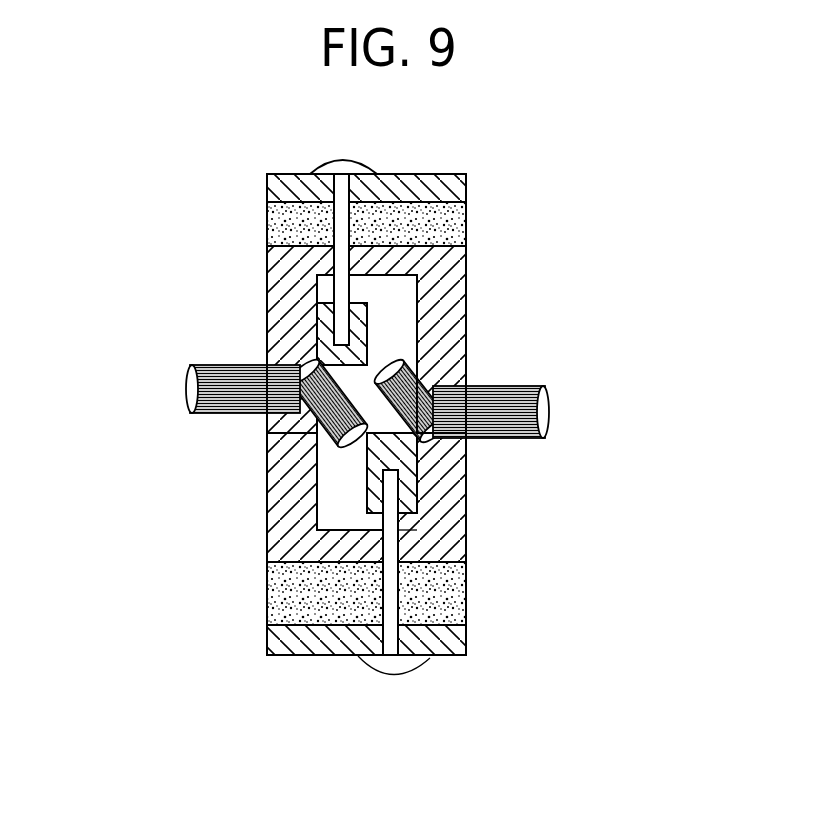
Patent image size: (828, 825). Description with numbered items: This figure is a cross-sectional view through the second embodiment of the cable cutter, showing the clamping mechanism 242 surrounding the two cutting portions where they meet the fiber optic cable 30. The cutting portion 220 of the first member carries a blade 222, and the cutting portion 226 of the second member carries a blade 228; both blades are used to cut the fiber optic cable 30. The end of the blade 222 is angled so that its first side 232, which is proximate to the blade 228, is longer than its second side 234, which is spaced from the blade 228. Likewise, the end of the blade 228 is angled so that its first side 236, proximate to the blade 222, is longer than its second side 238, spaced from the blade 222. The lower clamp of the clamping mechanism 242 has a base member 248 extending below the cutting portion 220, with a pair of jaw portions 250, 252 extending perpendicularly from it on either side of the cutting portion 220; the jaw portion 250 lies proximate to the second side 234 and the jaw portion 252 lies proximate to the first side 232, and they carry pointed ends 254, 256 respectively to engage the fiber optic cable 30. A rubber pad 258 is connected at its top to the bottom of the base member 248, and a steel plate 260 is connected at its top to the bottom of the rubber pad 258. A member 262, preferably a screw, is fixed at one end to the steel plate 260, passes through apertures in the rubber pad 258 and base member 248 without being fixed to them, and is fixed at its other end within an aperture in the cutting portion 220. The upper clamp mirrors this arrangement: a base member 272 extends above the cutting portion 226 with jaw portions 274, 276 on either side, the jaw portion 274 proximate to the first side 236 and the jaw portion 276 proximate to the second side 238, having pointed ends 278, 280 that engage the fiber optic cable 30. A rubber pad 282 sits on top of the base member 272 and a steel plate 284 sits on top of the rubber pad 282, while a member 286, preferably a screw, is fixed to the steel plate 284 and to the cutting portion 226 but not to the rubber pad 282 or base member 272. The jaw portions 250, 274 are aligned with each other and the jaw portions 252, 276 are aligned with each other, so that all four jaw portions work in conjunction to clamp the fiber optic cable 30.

The fiber optic cable 30 is at (190, 382).
The cutting portion 220 is at (440, 512).
The blade 222 is at (433, 483).
The cutting portion 226 is at (318, 303).
The blade 228 is at (300, 345).
The first side 232 is at (318, 500).
The second side 234 is at (440, 540).
The first side 236 is at (433, 316).
The second side 238 is at (336, 322).
The clamping mechanism 242 is at (413, 162).
The base member 248 is at (286, 548).
The jaw portion 250 is at (453, 488).
The jaw portion 252 is at (288, 448).
The pointed end 254 is at (440, 440).
The pointed end 256 is at (288, 428).
The rubber pad 258 is at (466, 594).
The steel plate 260 is at (455, 636).
The member 262 is at (400, 662).
The base member 272 is at (440, 268).
The jaw portion 274 is at (437, 345).
The jaw portion 276 is at (280, 268).
The pointed end 278 is at (437, 373).
The pointed end 280 is at (300, 368).
The rubber pad 282 is at (466, 225).
The steel plate 284 is at (466, 186).
The member 286 is at (337, 163).